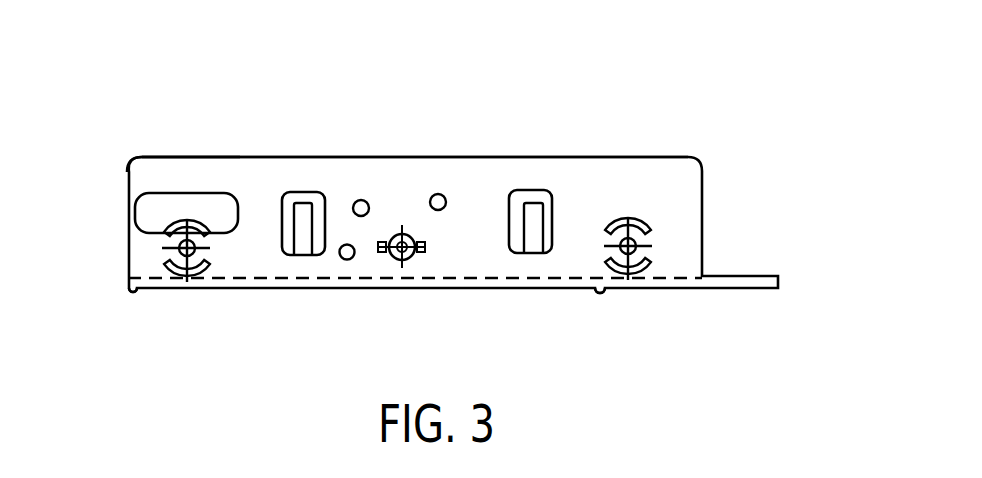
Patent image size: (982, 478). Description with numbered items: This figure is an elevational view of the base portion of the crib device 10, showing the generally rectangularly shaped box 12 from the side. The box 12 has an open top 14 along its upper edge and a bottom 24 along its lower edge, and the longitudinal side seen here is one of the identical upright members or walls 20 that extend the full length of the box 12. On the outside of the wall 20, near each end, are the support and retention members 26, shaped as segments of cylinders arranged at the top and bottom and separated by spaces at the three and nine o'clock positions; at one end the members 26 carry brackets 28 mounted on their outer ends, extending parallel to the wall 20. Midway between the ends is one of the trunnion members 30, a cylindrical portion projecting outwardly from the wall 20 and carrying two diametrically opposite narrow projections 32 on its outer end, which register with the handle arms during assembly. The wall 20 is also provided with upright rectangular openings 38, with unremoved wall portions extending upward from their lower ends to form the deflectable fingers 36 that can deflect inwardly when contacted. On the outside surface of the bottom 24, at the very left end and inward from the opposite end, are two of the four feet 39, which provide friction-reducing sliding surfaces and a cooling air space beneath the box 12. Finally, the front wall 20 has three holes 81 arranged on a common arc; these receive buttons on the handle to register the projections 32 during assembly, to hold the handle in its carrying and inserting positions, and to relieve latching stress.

The crib device 10 is at (412, 220).
The box 12 is at (676, 157).
The open top 14 is at (242, 158).
The upright members or walls 20 is at (182, 173).
The bottom 24 is at (148, 278).
The support and retention members 26 is at (190, 262).
The brackets 28 is at (155, 207).
The trunnion members 30 is at (412, 237).
The narrow projections 32 is at (383, 253).
The deflectable fingers 36 is at (302, 202).
The upright rectangular openings 38 is at (320, 193).
The feet 39 is at (133, 292).
The holes 81 is at (361, 200).